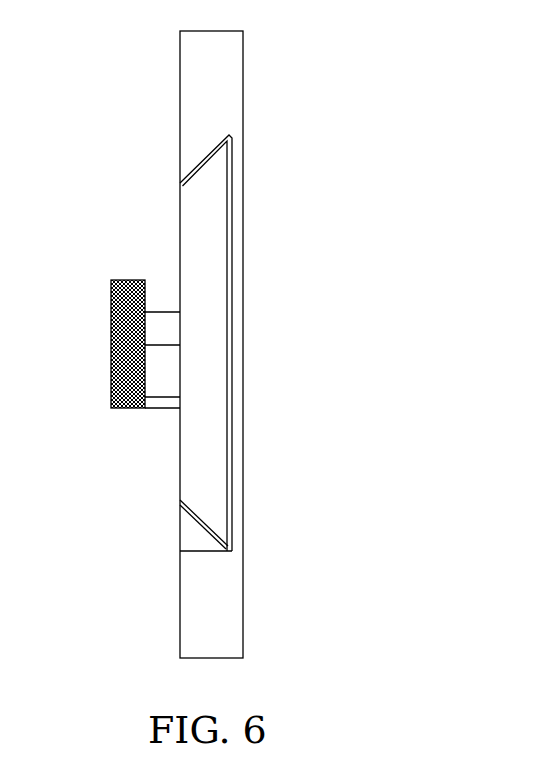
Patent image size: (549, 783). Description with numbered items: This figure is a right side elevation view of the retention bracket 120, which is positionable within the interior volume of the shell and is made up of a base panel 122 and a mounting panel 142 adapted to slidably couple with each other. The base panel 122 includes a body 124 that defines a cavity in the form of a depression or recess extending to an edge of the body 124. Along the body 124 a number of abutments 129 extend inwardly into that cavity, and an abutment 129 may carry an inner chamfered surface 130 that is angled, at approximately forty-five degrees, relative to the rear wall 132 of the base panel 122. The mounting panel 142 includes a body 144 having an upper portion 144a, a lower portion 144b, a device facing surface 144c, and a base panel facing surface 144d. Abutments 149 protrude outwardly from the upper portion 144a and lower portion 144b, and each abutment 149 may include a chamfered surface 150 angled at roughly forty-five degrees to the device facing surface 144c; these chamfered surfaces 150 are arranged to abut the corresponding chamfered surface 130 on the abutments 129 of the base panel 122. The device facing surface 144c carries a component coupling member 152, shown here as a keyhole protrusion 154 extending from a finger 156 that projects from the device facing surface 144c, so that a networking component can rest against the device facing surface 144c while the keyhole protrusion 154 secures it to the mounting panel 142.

The retention bracket 120 is at (133, 42).
The base panel 122 is at (243, 50).
The body 124 is at (228, 97).
The abutment 129 is at (183, 168).
The inner chamfered surface 130 is at (191, 145).
The rear wall 132 is at (244, 352).
The mounting panel 142 is at (180, 240).
The body 144 is at (217, 256).
The upper portion 144a is at (169, 212).
The lower portion 144b is at (169, 510).
The device facing surface 144c is at (169, 265).
The base panel facing surface 144d is at (215, 336).
The abutment 149 is at (209, 178).
The chamfered surface 150 is at (222, 161).
The component coupling member 152 is at (111, 298).
The keyhole protrusion 154 is at (122, 343).
The finger 156 is at (157, 390).